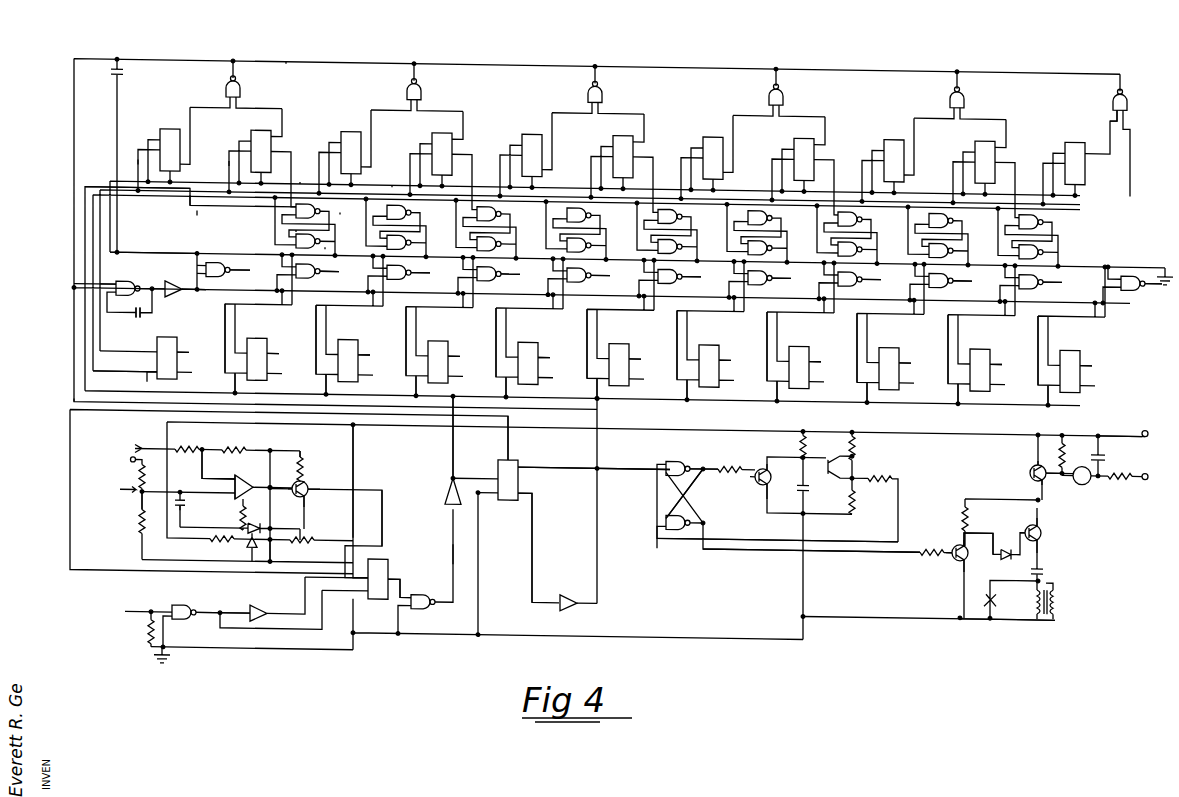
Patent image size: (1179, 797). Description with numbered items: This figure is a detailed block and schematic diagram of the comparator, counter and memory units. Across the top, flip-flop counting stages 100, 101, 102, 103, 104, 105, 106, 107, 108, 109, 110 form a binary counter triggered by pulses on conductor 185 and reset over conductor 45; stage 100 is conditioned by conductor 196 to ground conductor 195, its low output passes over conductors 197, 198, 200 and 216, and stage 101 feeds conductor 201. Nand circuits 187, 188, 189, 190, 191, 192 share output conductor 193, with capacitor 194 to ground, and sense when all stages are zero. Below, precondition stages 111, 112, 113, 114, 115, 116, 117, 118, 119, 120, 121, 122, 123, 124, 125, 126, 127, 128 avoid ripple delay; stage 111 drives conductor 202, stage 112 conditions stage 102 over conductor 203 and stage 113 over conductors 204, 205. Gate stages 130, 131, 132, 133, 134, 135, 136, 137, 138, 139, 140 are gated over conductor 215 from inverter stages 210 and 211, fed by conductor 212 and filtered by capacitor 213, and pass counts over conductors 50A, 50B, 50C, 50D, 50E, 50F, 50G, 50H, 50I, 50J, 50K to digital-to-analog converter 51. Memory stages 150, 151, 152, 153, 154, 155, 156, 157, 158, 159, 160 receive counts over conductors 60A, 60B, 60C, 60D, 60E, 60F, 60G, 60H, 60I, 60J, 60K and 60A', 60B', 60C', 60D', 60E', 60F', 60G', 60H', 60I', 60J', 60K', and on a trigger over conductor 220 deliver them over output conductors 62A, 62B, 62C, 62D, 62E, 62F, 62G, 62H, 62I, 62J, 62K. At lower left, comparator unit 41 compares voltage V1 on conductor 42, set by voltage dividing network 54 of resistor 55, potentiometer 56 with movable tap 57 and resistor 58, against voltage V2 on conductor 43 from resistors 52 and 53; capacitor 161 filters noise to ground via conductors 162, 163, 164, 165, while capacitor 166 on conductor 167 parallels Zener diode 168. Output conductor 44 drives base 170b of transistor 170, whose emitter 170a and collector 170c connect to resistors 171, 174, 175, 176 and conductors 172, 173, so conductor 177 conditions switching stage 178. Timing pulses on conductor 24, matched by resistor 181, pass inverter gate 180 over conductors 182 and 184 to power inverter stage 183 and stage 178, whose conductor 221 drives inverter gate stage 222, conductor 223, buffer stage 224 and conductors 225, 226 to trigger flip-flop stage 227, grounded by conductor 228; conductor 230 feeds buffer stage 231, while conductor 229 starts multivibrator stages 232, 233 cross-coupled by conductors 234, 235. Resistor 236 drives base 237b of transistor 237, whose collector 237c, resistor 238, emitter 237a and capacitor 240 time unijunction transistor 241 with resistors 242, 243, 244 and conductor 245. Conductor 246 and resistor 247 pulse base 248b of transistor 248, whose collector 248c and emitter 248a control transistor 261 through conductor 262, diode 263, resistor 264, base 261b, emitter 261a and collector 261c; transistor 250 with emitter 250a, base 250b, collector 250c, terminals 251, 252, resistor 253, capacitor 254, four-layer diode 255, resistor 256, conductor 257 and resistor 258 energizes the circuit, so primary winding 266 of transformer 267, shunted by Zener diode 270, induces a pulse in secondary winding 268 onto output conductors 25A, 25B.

The conductor 24 is at (130, 612).
The output conductor 25A is at (1054, 566).
The output conductor 25B is at (1060, 613).
The comparator unit 41 is at (240, 474).
The input conductor 42 is at (196, 488).
The second input conductor 43 is at (198, 458).
The output conductor 44 is at (262, 482).
The conductor 45 is at (80, 232).
The digital-to-analog converter 51 is at (146, 452).
The resistor 52 is at (180, 447).
The resistor 53 is at (226, 447).
The voltage dividing network 54 is at (120, 487).
The resistor 55 is at (140, 472).
The potentiometer 56 is at (142, 496).
The movable tap 57 is at (147, 486).
The resistor 58 is at (138, 524).
The first voltage V1 is at (199, 500).
The second voltage V2 is at (233, 481).
The flip-flop counting stage 100 is at (163, 149).
The flip-flop counting stage 101 is at (261, 157).
The flip-flop counting stage 102 is at (344, 152).
The flip-flop counting stage 103 is at (442, 160).
The flip-flop counting stage 104 is at (525, 155).
The flip-flop counting stage 105 is at (623, 162).
The flip-flop counting stage 106 is at (706, 158).
The flip-flop counting stage 107 is at (804, 165).
The flip-flop counting stage 108 is at (887, 160).
The flip-flop counting stage 109 is at (985, 168).
The flip-flop counting stage 110 is at (1079, 158).
The precondition stage 111 is at (309, 221).
The precondition stage 112 is at (305, 227).
The precondition stage 113 is at (400, 222).
The precondition stage 114 is at (396, 228).
The precondition stage 115 is at (490, 224).
The precondition stage 116 is at (486, 229).
The precondition stage 117 is at (580, 225).
The precondition stage 118 is at (576, 231).
The precondition stage 119 is at (671, 226).
The precondition stage 120 is at (667, 232).
The precondition stage 121 is at (761, 228).
The precondition stage 122 is at (757, 234).
The precondition stage 123 is at (851, 229).
The precondition stage 124 is at (847, 235).
The precondition stage 125 is at (942, 230).
The precondition stage 126 is at (938, 236).
The precondition stage 127 is at (1032, 232).
The precondition stage 128 is at (1028, 238).
The gate stage 130 is at (223, 269).
The gate stage 131 is at (307, 273).
The gate stage 132 is at (398, 274).
The gate stage 133 is at (488, 275).
The gate stage 134 is at (578, 277).
The gate stage 135 is at (669, 278).
The gate stage 136 is at (759, 280).
The gate stage 137 is at (849, 281).
The gate stage 138 is at (940, 282).
The gate stage 139 is at (1030, 284).
The gate stage 140 is at (1131, 285).
The memory stage 150 is at (142, 357).
The memory stage 151 is at (259, 324).
The memory stage 152 is at (350, 325).
The memory stage 153 is at (440, 327).
The memory stage 154 is at (530, 328).
The memory stage 155 is at (621, 329).
The memory stage 156 is at (711, 331).
The memory stage 157 is at (801, 332).
The memory stage 158 is at (891, 334).
The memory stage 159 is at (982, 335).
The memory stage 160 is at (1072, 336).
The capacitor 161 is at (185, 506).
The conductor 162 is at (222, 526).
The conductor 163 is at (270, 516).
The conductor 164 is at (322, 553).
The ground conductor 165 is at (256, 648).
The capacitor 166 is at (240, 532).
The conductor 167 is at (250, 502).
The Zener diode 168 is at (250, 550).
The transistor 170 is at (326, 530).
The emitter 170a is at (287, 503).
The base 170b is at (294, 478).
The collector 170c is at (308, 483).
The resistor 171 is at (222, 543).
The conductor 172 is at (258, 424).
The conductor 173 is at (353, 435).
The resistor 174 is at (312, 531).
The resistor 175 is at (272, 548).
The dropping resistor 176 is at (301, 458).
The conductor 177 is at (384, 505).
The switching stage 178 is at (358, 579).
The inverter gate 180 is at (252, 635).
The resistor 181 is at (142, 625).
The conductor 182 is at (221, 611).
The power inverter stage 183 is at (258, 611).
The conductor 184 is at (258, 630).
The conductor 185 is at (74, 254).
The nand circuit 187 is at (241, 88).
The nand circuit 188 is at (422, 88).
The nand circuit 189 is at (603, 88).
The nand circuit 190 is at (784, 88).
The nand circuit 191 is at (965, 88).
The nand circuit 192 is at (1128, 88).
The conductor 193 is at (288, 62).
The capacitor 194 is at (122, 73).
The ground conductor 195 is at (126, 251).
The conductor 196 is at (132, 158).
The conductor 197 is at (216, 158).
The conductor 198 is at (234, 199).
The conductor 200 is at (206, 214).
The conductor 201 is at (306, 180).
The output conductor 202 is at (294, 224).
The conductor 203 is at (314, 236).
The conductor 204 is at (352, 208).
The line 205 is at (396, 180).
The inverter stage 210 is at (113, 299).
The inverter stage 211 is at (173, 281).
The conductor 212 is at (110, 277).
The capacitor 213 is at (133, 318).
The conductor 215 is at (218, 289).
The conductor 216 is at (200, 242).
The conductor 220 is at (144, 384).
The conductor 221 is at (399, 594).
The inverter gate stage 222 is at (424, 572).
The output conductor 223 is at (444, 527).
The buffer stage 224 is at (444, 482).
The output conductor 225 is at (454, 425).
The conductor 226 is at (468, 461).
The trigger flip-flop stage 227 is at (574, 510).
The conductor 228 is at (479, 526).
The conductor 229 is at (560, 455).
The conductor 230 is at (533, 502).
The buffer stage 231 is at (570, 582).
The multivibrator first stage 232 is at (687, 505).
The multivibrator second stage 233 is at (788, 512).
The conductor 234 is at (756, 453).
The conductor 235 is at (694, 490).
The resistor 236 is at (730, 458).
The transistor 237 is at (758, 456).
The emitter 237a is at (764, 492).
The base 237b is at (748, 488).
The collector 237c is at (766, 456).
The resistor 238 is at (805, 435).
The capacitor 240 is at (802, 492).
The unijunction transistor 241 is at (840, 470).
The resistor 242 is at (855, 435).
The resistor 243 is at (854, 492).
The resistor 244 is at (880, 470).
The conductor 245 is at (848, 530).
The conductor 246 is at (856, 554).
The resistor 247 is at (918, 542).
The transistor 248 is at (954, 552).
The emitter 248a is at (975, 567).
The base 248b is at (950, 539).
The collector 248c is at (976, 542).
The transistor 250 is at (1028, 459).
The emitter 250a is at (1034, 452).
The base 250b is at (1048, 466).
The collector 250c is at (1036, 474).
The terminal 251 is at (1152, 428).
The terminal 252 is at (1152, 472).
The resistor 253 is at (1118, 469).
The capacitor 254 is at (1104, 438).
The four-layer diode 255 is at (1090, 480).
The resistor 256 is at (1065, 430).
The conductor 257 is at (984, 484).
The resistor 258 is at (962, 499).
The transistor 261 is at (1042, 524).
The emitter 261a is at (1040, 530).
The base 261b is at (1024, 518).
The collector 261c is at (1038, 513).
The conductor 262 is at (968, 520).
The diode 263 is at (1005, 546).
The resistor 264 is at (1042, 547).
The primary winding 266 is at (1036, 592).
The transformer 267 is at (929, 620).
The secondary winding 268 is at (1058, 584).
The Zener diode 270 is at (990, 587).
The conductor 50A is at (239, 275).
The conductor 50B is at (329, 275).
The conductor 50C is at (420, 275).
The conductor 50D is at (510, 275).
The conductor 50E is at (600, 275).
The conductor 50F is at (691, 275).
The conductor 50G is at (781, 275).
The conductor 50H is at (871, 275).
The conductor 50I is at (962, 275).
The conductor 50J is at (1052, 275).
The conductor 50K is at (1152, 275).
The conductor 60A is at (137, 194).
The conductor 60B is at (239, 338).
The conductor 60C is at (330, 339).
The conductor 60D is at (420, 341).
The conductor 60E is at (509, 342).
The conductor 60F is at (600, 343).
The conductor 60G is at (691, 345).
The conductor 60H is at (781, 346).
The conductor 60I is at (869, 347).
The conductor 60J is at (960, 349).
The conductor 60K is at (1052, 350).
The conductor 60A' is at (125, 361).
The conductor 60B' is at (215, 382).
The conductor 60C' is at (306, 384).
The conductor 60D' is at (396, 385).
The conductor 60E' is at (486, 386).
The conductor 60F' is at (577, 388).
The conductor 60G' is at (667, 389).
The conductor 60H' is at (757, 391).
The conductor 60I' is at (848, 392).
The conductor 60J' is at (938, 393).
The conductor 60K' is at (1028, 395).
The output conductor 62A is at (186, 350).
The output conductor 62B is at (276, 350).
The output conductor 62C is at (367, 350).
The output conductor 62D is at (457, 350).
The output conductor 62E is at (547, 350).
The output conductor 62F is at (638, 350).
The output conductor 62G is at (728, 350).
The output conductor 62H is at (818, 350).
The output conductor 62I is at (908, 350).
The output conductor 62J is at (999, 350).
The output conductor 62K is at (1089, 350).